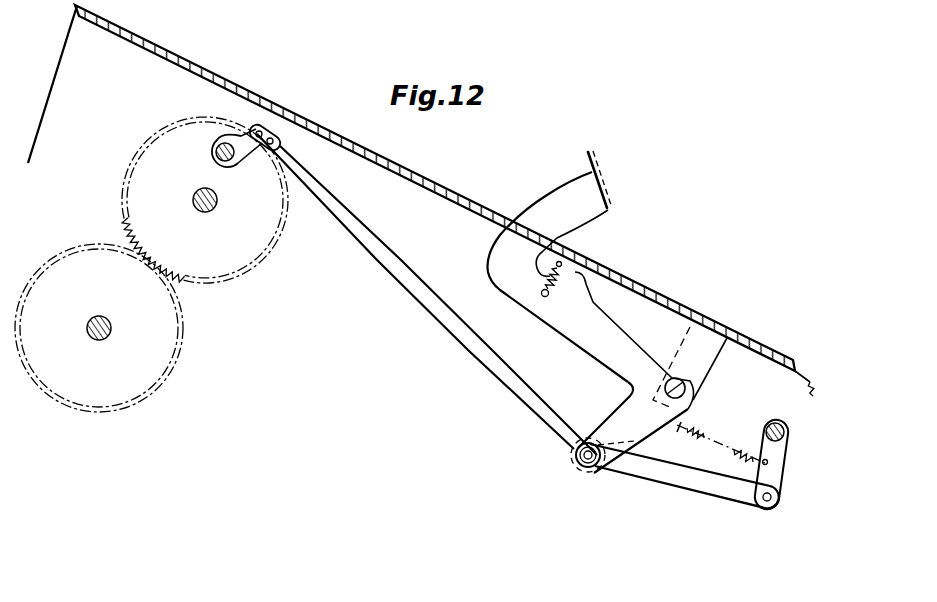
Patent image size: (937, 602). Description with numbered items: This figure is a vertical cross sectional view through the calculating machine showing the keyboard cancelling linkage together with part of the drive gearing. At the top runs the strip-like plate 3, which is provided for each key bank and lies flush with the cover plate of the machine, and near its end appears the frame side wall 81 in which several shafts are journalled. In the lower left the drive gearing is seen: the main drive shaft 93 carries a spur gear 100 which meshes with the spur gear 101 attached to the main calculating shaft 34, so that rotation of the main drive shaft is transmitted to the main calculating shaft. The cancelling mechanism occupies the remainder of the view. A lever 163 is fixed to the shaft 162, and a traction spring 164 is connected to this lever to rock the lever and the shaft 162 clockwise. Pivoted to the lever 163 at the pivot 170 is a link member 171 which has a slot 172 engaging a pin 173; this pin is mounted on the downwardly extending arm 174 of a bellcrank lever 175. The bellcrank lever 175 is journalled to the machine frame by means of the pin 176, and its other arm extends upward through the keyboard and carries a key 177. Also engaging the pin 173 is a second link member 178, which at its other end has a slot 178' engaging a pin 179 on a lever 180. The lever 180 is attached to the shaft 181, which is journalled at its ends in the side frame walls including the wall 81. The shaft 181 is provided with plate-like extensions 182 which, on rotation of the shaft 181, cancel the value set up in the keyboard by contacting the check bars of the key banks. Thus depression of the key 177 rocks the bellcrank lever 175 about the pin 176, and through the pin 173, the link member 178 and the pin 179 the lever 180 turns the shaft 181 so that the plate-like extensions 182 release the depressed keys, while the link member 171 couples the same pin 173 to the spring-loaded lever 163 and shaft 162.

The strip-like plate 3 is at (747, 338).
The main calculating shaft 34 is at (208, 208).
The frame side wall 81 is at (806, 375).
The main drive shaft 93 is at (108, 334).
The spur gear 100 is at (172, 322).
The spur gear 101 is at (127, 188).
The shaft 162 is at (797, 415).
The lever 163 is at (781, 458).
The traction spring 164 is at (712, 434).
The pivot 170 is at (805, 485).
The link member 171 is at (671, 484).
The slot 172 is at (608, 473).
The pin 173 is at (578, 473).
The downwardly extending arm 174 is at (607, 424).
The bellcrank lever 175 is at (532, 306).
The pin 176 is at (685, 390).
The key 177 is at (602, 178).
The link member 178 is at (427, 294).
The slot 178' is at (304, 115).
The pin 179 is at (262, 130).
The lever 180 is at (240, 160).
The shaft 181 is at (222, 142).
The plate-like extension 182 is at (237, 138).